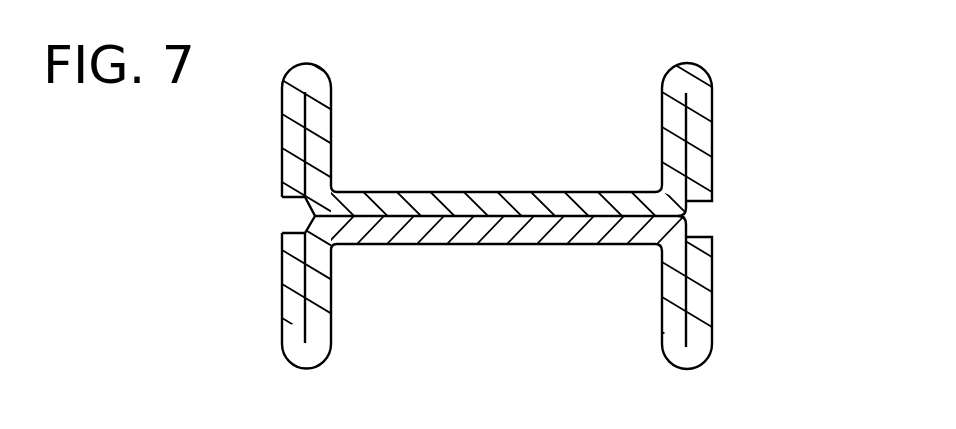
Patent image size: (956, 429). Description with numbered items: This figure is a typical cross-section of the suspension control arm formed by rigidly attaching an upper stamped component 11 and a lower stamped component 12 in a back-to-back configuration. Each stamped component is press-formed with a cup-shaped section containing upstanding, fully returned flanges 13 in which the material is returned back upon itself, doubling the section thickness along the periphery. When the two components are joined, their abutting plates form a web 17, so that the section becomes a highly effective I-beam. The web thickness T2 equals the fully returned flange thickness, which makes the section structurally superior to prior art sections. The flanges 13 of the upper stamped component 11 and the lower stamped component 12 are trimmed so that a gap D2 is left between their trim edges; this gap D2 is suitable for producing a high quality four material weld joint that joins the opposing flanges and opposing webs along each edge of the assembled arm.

The upper stamped component 11 is at (412, 185).
The lower stamped component 12 is at (462, 250).
The fully returned flange 13 is at (690, 163).
The web 17 is at (613, 238).
The web thickness T2 is at (547, 268).
The gap D2 is at (219, 133).